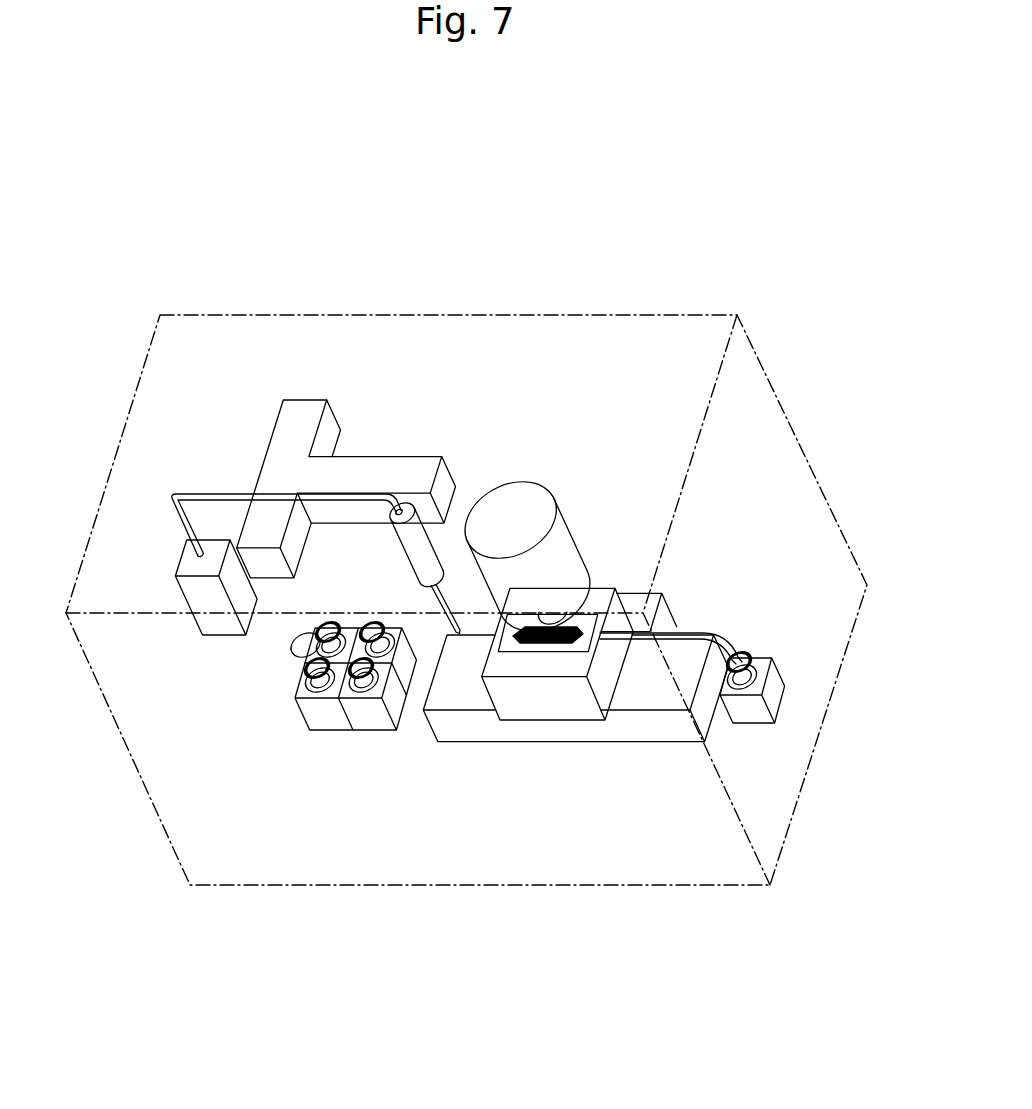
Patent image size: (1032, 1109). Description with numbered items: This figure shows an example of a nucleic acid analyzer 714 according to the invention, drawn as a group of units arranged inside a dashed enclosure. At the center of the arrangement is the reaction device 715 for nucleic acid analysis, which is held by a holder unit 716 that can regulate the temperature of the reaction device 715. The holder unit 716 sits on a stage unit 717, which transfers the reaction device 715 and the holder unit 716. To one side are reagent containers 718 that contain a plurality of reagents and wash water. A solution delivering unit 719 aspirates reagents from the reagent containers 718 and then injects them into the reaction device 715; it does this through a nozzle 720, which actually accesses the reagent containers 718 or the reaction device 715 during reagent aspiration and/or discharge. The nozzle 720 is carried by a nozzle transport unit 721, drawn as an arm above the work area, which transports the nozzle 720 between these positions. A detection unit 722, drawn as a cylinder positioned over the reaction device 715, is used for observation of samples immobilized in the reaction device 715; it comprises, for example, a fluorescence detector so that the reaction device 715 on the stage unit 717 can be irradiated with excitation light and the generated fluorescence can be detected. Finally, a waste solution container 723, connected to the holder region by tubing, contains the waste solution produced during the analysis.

The nucleic acid analyzer 714 is at (823, 229).
The reaction device for nucleic acid analysis 715 is at (582, 624).
The holder unit 716 is at (503, 698).
The stage unit 717 is at (657, 735).
The reagent containers 718 is at (318, 710).
The solution delivering unit 719 is at (218, 623).
The nozzle 720 is at (438, 580).
The nozzle transport unit 721 is at (361, 467).
The detection unit 722 is at (507, 508).
The waste solution container 723 is at (768, 712).